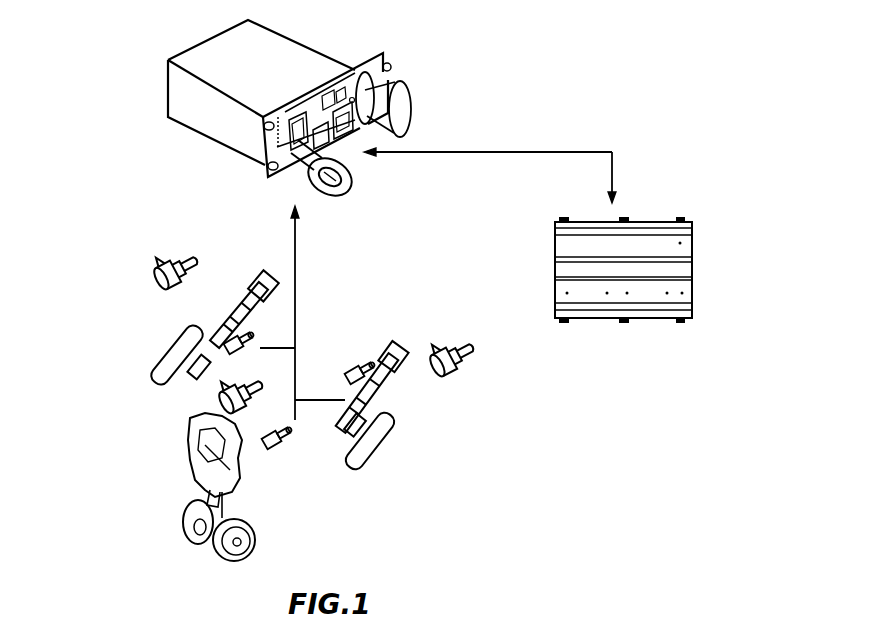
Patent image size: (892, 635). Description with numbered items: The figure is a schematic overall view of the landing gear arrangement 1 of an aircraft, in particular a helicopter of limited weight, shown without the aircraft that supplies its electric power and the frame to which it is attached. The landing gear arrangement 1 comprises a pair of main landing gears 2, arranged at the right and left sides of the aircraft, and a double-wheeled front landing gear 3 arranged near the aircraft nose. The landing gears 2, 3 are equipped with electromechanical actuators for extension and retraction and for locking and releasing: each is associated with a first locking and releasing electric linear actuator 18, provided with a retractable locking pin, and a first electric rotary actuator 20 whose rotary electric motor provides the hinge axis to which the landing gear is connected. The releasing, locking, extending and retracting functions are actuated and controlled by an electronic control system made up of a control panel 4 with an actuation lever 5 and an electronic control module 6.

The landing gear arrangement 1 is at (485, 108).
The main landing gear 2 is at (217, 315).
The double-wheeled front landing gear 3 is at (200, 487).
The control panel 4 is at (197, 98).
The actuation lever 5 is at (330, 190).
The electronic control module 6 is at (647, 319).
The first locking and releasing electric linear actuator 18 is at (232, 348).
The first electric rotary actuator 20 is at (163, 280).